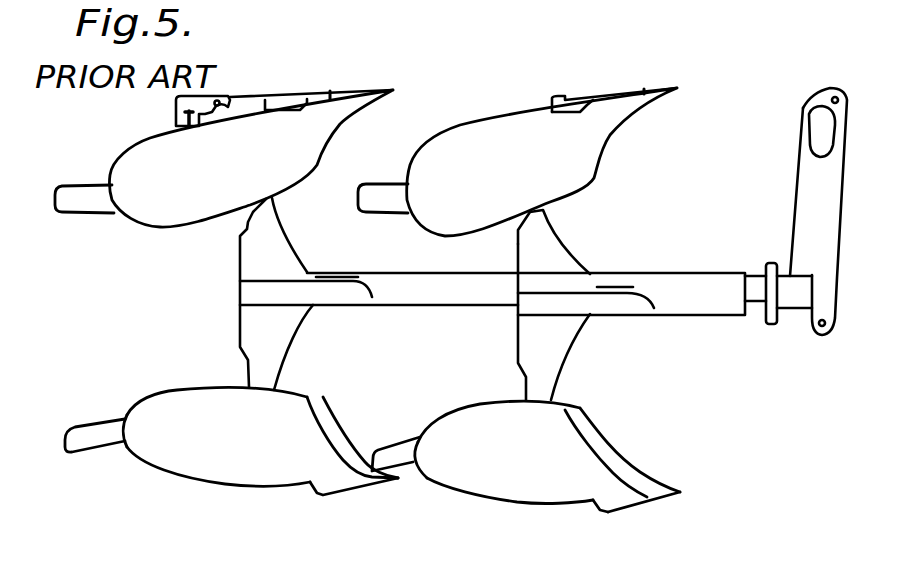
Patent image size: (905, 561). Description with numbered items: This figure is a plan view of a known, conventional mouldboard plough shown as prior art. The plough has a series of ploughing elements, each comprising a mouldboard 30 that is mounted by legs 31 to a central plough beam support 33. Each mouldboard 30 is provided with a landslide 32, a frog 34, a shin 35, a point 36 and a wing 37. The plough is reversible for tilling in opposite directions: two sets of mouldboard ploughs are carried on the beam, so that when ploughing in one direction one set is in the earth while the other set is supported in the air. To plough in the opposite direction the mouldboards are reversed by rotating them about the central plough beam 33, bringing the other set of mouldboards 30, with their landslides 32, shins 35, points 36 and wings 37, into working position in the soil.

The mouldboard 30 is at (128, 153).
The legs 31 is at (257, 338).
The landslide 32 is at (240, 93).
The central plough beam support 33 is at (653, 275).
The frog 34 is at (285, 93).
The shin 35 is at (607, 440).
The point 36 is at (667, 497).
The wing 37 is at (619, 510).